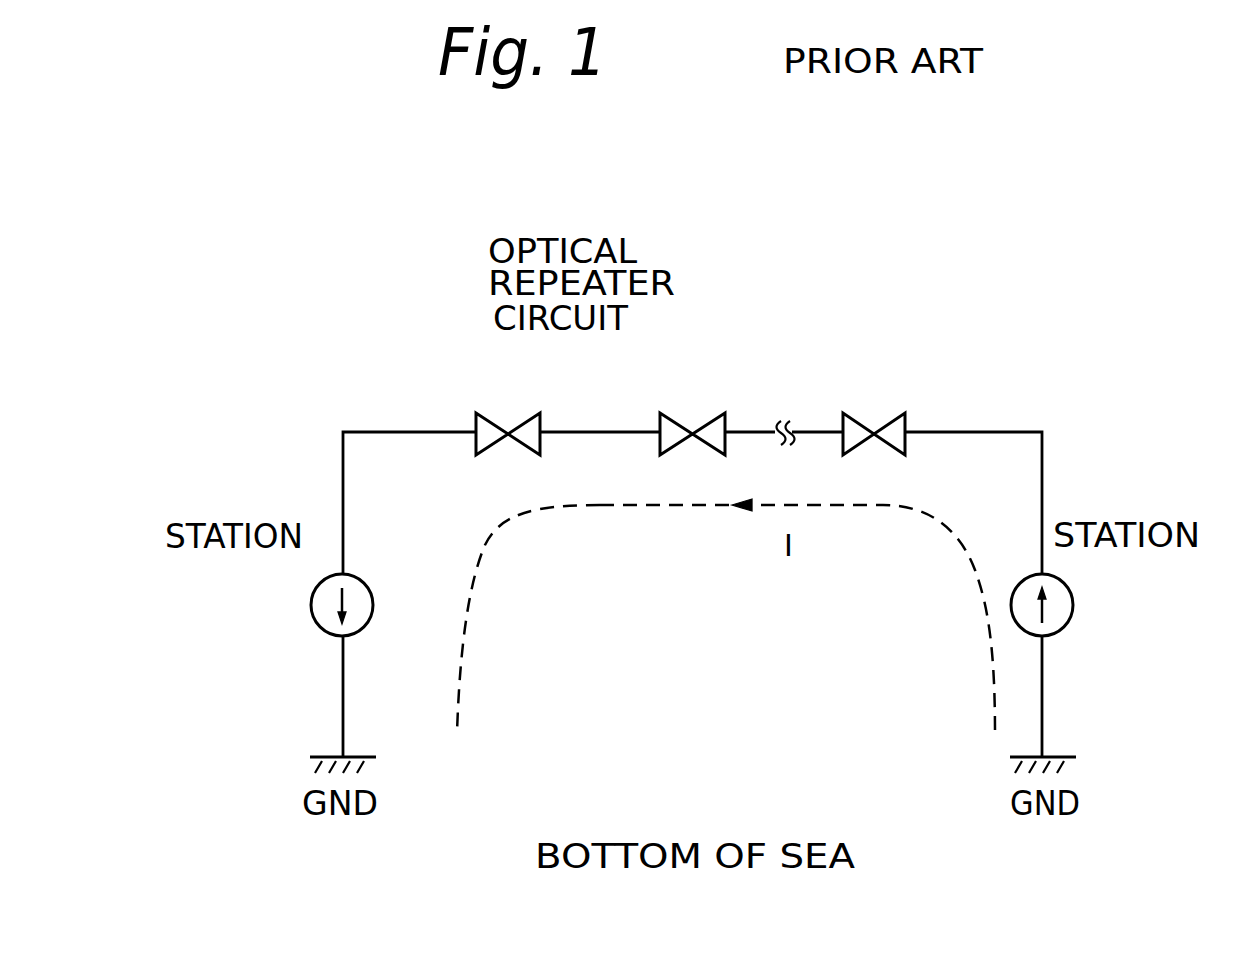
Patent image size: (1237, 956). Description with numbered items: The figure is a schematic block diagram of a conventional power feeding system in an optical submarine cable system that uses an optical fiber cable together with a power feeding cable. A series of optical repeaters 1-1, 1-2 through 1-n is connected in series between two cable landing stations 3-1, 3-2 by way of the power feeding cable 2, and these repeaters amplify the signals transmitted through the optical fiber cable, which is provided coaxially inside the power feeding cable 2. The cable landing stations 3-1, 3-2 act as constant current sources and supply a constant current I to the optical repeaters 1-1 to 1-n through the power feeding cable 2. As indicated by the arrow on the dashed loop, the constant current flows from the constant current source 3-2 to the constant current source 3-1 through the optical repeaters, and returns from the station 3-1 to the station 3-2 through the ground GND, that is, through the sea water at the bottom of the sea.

The optical repeater 1-1 is at (508, 418).
The optical repeater 1-2 is at (700, 418).
The optical repeater 1-n is at (872, 418).
The power feeding cable 2 is at (578, 440).
The cable landing station 3-1 is at (374, 604).
The cable landing station 3-2 is at (1074, 604).